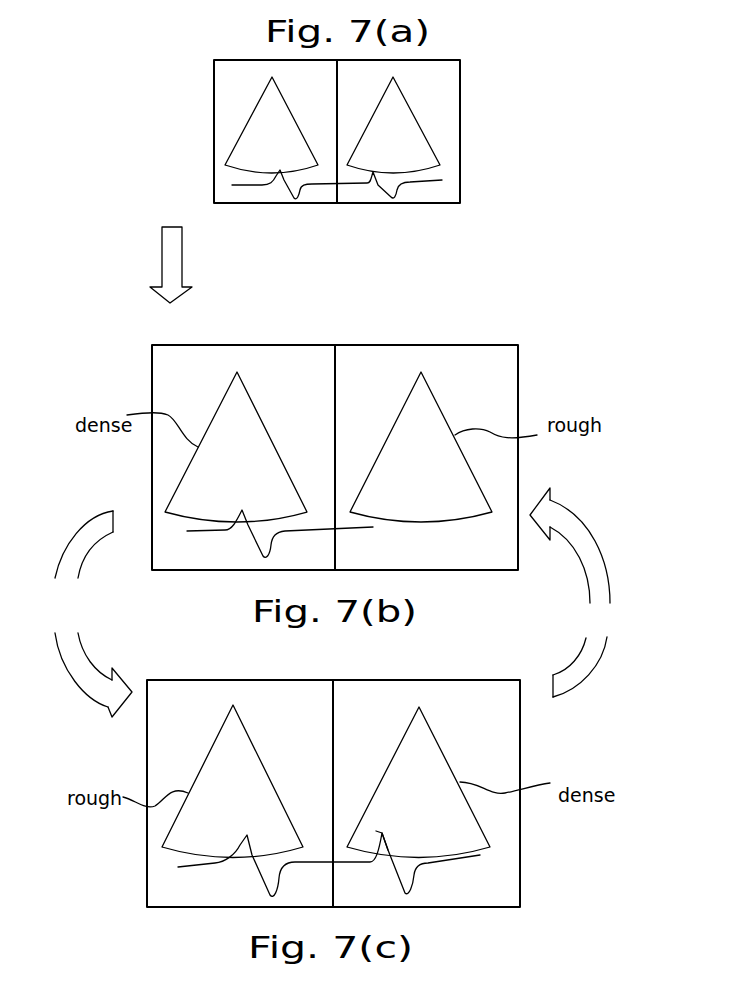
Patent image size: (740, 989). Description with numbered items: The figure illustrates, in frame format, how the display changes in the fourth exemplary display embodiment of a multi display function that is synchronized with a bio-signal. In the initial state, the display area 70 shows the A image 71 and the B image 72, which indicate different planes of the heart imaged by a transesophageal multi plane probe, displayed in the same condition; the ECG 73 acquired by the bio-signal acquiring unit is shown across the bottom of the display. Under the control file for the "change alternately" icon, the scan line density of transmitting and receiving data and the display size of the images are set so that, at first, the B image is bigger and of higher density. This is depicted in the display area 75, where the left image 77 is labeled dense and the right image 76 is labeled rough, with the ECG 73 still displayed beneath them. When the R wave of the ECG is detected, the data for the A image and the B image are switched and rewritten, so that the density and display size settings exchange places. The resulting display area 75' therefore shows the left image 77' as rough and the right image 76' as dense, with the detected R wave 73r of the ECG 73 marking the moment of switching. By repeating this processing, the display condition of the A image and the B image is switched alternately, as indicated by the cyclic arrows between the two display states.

In FIG. 7A, the image area (original) 70 is at (462, 145).
In FIG. 7A, the A image 71 is at (410, 143).
In FIG. 7A, the B image 72 is at (251, 137).
In FIG. 7A, the ECG 73 is at (245, 187).
In FIG. 7B, the ECG 73 is at (223, 533).
In FIG. 7C, the ECG 73 is at (213, 870).
In FIG. 7B, the image area after processing 75 is at (335, 442).
In FIG. 7B, the right conical image region (rough) 76 is at (421, 461).
In FIG. 7B, the left conical image region (dense) 77 is at (240, 447).
In FIG. 7C, the image area after reversal 75' is at (362, 793).
In FIG. 7C, the right conical image region (dense) 76' is at (418, 782).
In FIG. 7C, the left conical image region (rough) 77' is at (244, 781).
In FIG. 7C, the reversed density profile peak 73r is at (382, 833).